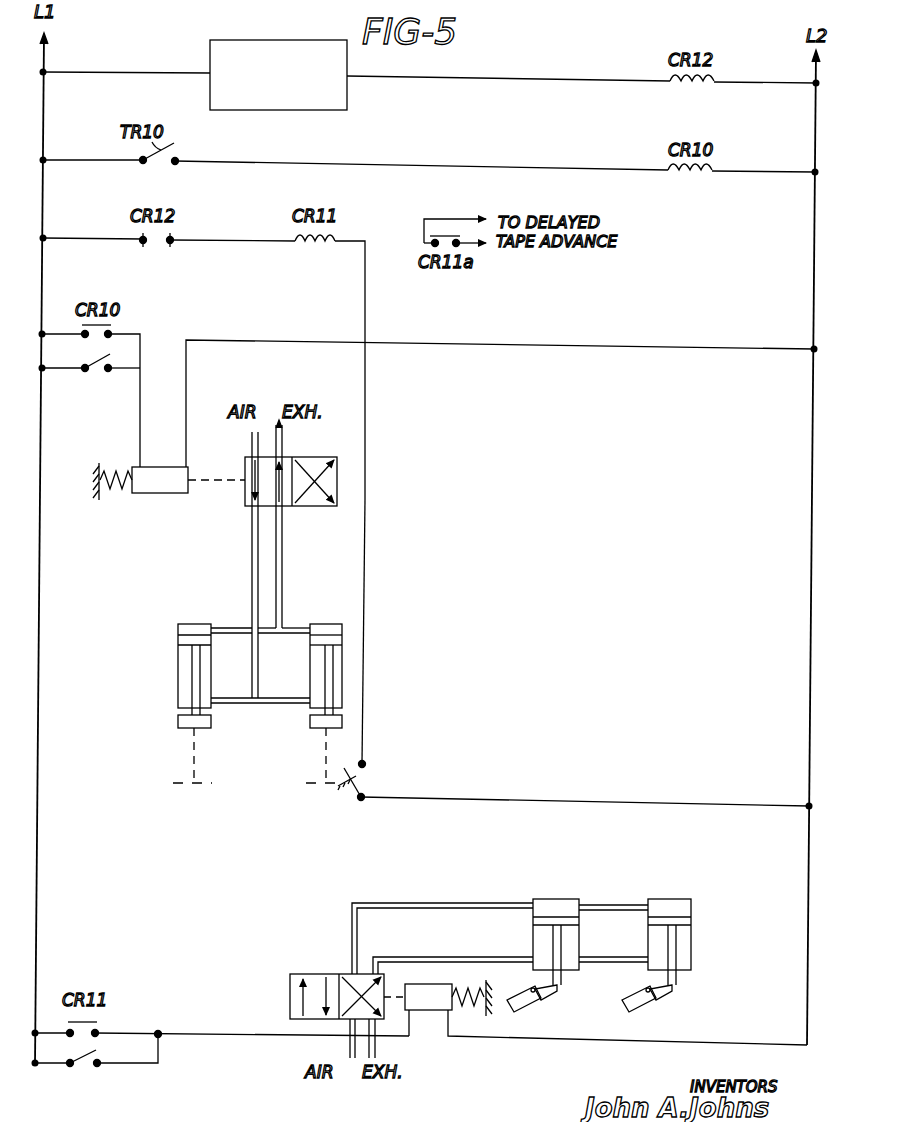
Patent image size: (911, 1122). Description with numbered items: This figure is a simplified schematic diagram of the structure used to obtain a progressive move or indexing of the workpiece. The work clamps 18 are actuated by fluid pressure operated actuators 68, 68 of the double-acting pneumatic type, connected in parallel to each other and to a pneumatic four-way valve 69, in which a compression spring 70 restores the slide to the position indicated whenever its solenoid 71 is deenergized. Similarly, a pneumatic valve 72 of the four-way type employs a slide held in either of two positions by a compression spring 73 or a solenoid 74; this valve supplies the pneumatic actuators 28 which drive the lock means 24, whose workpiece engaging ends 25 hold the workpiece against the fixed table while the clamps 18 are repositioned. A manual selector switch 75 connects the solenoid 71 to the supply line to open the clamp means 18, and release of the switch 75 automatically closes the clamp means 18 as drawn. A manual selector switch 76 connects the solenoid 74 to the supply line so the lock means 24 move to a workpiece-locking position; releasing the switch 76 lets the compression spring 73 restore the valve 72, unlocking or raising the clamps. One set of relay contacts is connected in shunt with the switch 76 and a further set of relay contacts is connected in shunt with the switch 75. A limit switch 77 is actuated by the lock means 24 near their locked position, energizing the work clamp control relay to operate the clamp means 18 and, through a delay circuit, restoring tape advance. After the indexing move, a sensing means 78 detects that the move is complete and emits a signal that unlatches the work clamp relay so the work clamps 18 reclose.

The X-axis in-position sensing means 78 is at (303, 42).
The manual selector switch 76 is at (97, 372).
The solenoid 74 is at (158, 494).
The compression spring 73 is at (114, 490).
The pneumatic valve 72 is at (293, 458).
The power driven lock means 24 is at (231, 685).
The pneumatic actuators 28 is at (178, 668).
The workpiece engaging end 25 is at (310, 722).
The limit switch 77 is at (364, 768).
The manual selector switch 75 is at (80, 1060).
The pneumatic four-way valve 69 is at (318, 974).
The solenoid 71 is at (430, 984).
The compression spring 70 is at (467, 1012).
The fluid pressure operated actuators 68 is at (666, 917).
The workpiece clamps 18 is at (622, 1003).